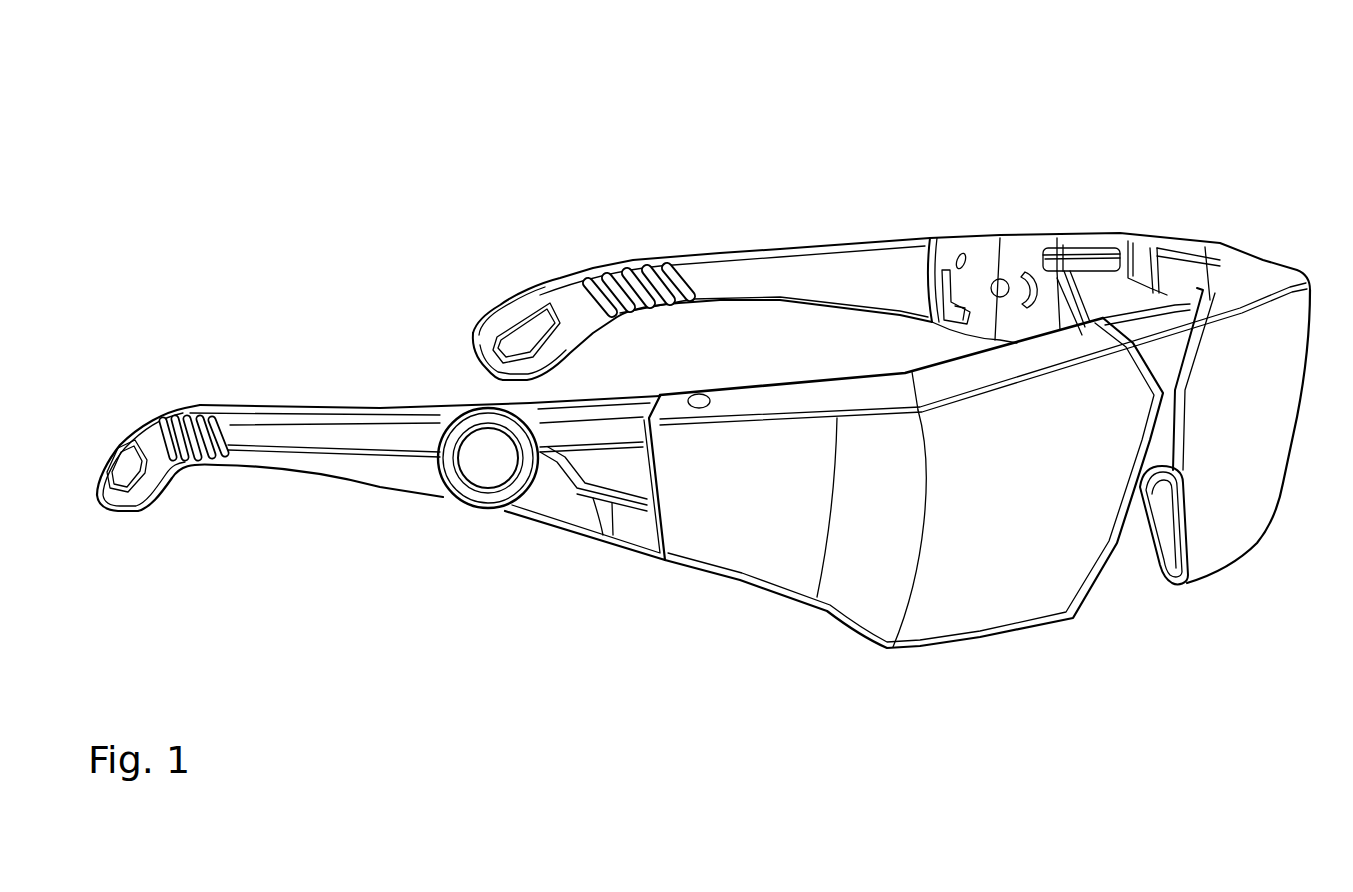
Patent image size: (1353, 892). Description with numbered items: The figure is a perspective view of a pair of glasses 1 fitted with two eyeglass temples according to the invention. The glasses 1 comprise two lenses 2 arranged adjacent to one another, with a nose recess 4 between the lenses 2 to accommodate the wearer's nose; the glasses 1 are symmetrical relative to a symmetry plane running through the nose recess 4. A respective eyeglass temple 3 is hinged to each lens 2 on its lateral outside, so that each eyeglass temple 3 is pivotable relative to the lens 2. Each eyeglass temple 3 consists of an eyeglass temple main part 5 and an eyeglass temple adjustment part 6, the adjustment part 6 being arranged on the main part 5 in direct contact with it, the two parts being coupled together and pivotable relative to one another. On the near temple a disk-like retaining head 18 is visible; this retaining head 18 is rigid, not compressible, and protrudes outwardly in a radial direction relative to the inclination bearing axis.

The pair of glasses 1 is at (962, 186).
The lens 2 is at (980, 626).
The eyeglass temple 3 is at (887, 221).
The nose recess 4 is at (1135, 587).
The eyeglass temple main part 5 is at (1075, 232).
The eyeglass temple adjustment part 6 is at (782, 240).
The retaining head 18 is at (485, 476).